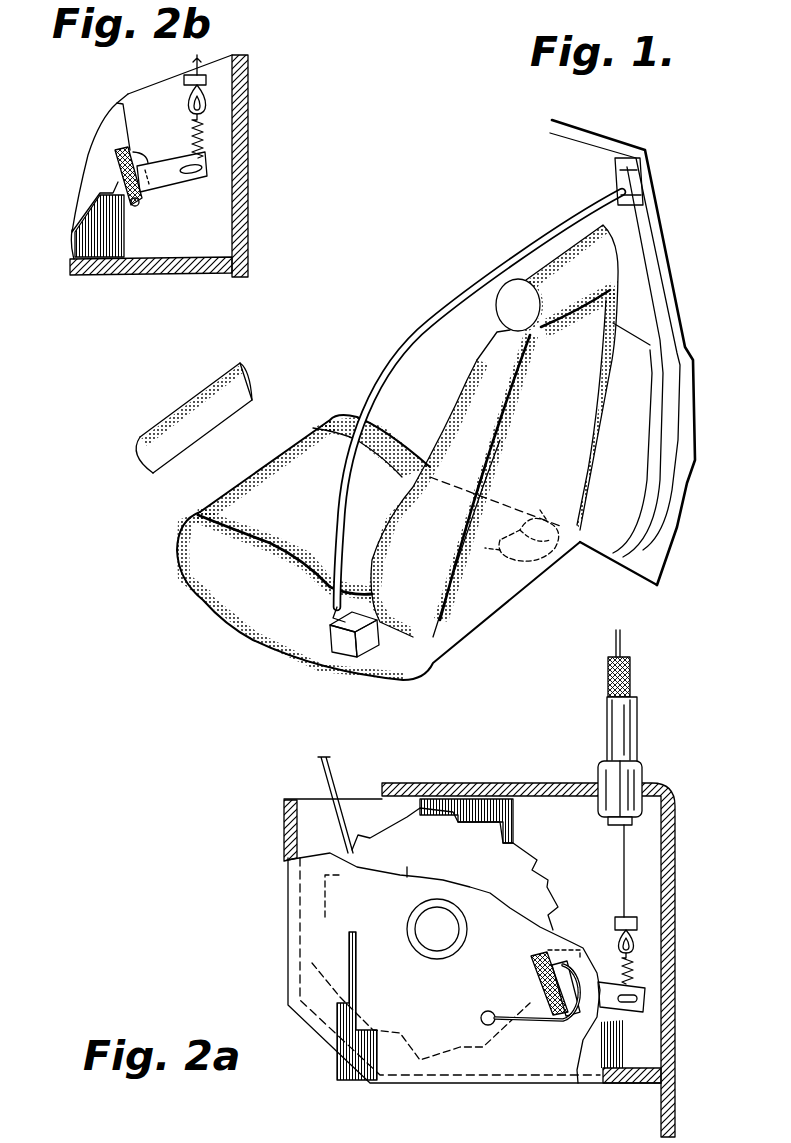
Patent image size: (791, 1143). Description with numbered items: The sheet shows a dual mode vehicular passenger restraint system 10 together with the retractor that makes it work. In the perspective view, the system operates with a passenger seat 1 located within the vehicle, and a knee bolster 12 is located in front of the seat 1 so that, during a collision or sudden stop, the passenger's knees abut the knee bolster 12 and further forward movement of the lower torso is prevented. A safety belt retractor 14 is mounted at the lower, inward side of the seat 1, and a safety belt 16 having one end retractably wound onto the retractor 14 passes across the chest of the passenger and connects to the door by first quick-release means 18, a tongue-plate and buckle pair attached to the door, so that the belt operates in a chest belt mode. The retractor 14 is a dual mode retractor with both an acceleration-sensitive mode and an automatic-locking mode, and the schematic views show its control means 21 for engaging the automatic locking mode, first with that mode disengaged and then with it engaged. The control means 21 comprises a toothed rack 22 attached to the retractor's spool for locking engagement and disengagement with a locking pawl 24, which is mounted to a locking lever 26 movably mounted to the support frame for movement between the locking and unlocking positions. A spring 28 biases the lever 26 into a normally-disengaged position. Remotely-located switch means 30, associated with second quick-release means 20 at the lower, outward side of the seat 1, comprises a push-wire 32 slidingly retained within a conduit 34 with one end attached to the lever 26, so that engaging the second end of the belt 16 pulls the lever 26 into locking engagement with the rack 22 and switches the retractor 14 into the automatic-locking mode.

In FIG. 1, the passenger seat 1 is at (470, 663).
In FIG. 1, the vehicular passenger restraint system 10 is at (285, 360).
In FIG. 1, the knee bolster 12 is at (670, 278).
In FIG. 1, the safety belt retractor 14 is at (340, 633).
In FIG. 2A, the safety belt retractor 14 is at (272, 868).
In FIG. 1, the safety belt 16 is at (502, 267).
In FIG. 2A, the safety belt 16 is at (328, 772).
In FIG. 1, the first quick-release means 18 is at (628, 165).
In FIG. 1, the second quick-release means 20 is at (513, 563).
In FIG. 2A, the control means 21 is at (651, 910).
In FIG. 2B, the control means 21 is at (178, 196).
In FIG. 2A, the toothed rack 22 is at (407, 867).
In FIG. 2B, the toothed rack 22 is at (105, 128).
In FIG. 2A, the locking pawl 24 is at (578, 1083).
In FIG. 2B, the locking pawl 24 is at (127, 205).
In FIG. 2A, the locking lever 26 is at (648, 1007).
In FIG. 2B, the locking lever 26 is at (208, 166).
In FIG. 2A, the spring 28 is at (565, 1023).
In FIG. 2A, the switch means 30 is at (596, 737).
In FIG. 2A, the push-wire 32 is at (621, 852).
In FIG. 2A, the conduit 34 is at (631, 673).